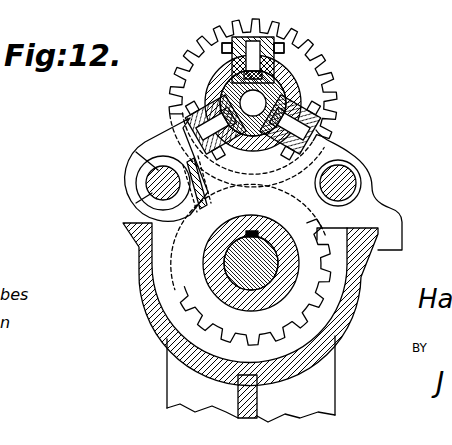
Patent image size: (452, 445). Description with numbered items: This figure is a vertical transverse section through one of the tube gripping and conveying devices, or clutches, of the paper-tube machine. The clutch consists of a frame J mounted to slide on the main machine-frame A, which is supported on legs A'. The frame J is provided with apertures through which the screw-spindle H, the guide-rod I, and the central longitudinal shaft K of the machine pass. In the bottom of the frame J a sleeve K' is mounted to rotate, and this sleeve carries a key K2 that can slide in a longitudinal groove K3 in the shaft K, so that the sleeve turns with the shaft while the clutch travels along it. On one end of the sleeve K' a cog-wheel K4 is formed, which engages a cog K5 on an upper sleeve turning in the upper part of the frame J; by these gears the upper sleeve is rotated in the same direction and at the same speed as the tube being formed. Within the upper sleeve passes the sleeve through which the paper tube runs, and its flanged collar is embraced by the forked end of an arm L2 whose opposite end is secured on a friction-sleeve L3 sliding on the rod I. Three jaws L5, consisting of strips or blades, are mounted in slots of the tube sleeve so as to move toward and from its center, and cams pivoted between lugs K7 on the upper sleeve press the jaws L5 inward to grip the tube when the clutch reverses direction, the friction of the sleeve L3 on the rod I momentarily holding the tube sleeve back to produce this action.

The frame A is at (258, 319).
The legs A' is at (251, 398).
The central longitudinal shaft K is at (268, 263).
The sleeve K' is at (256, 263).
The key K2 is at (253, 231).
The longitudinal groove K3 is at (238, 238).
The cog-wheel K4 is at (178, 275).
The cog K5 is at (312, 56).
The lugs K7 is at (282, 43).
The arm L2 is at (160, 137).
The friction-sleeve L3 is at (258, 40).
The jaws L5 is at (280, 76).
The guide-rod I is at (147, 170).
The screw-spindle H is at (353, 171).
The frame J is at (360, 208).